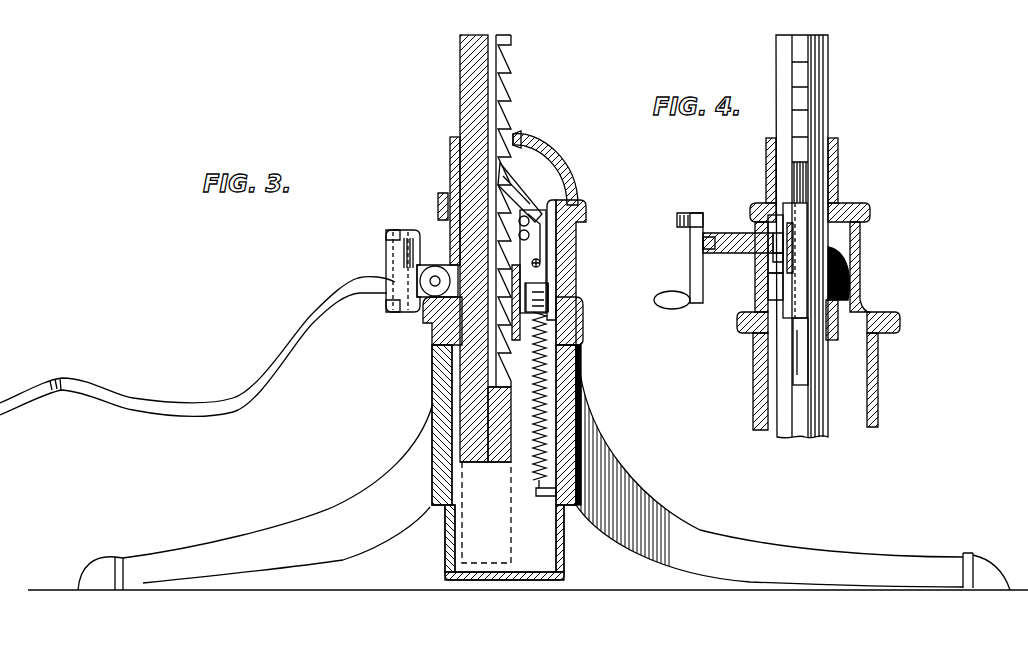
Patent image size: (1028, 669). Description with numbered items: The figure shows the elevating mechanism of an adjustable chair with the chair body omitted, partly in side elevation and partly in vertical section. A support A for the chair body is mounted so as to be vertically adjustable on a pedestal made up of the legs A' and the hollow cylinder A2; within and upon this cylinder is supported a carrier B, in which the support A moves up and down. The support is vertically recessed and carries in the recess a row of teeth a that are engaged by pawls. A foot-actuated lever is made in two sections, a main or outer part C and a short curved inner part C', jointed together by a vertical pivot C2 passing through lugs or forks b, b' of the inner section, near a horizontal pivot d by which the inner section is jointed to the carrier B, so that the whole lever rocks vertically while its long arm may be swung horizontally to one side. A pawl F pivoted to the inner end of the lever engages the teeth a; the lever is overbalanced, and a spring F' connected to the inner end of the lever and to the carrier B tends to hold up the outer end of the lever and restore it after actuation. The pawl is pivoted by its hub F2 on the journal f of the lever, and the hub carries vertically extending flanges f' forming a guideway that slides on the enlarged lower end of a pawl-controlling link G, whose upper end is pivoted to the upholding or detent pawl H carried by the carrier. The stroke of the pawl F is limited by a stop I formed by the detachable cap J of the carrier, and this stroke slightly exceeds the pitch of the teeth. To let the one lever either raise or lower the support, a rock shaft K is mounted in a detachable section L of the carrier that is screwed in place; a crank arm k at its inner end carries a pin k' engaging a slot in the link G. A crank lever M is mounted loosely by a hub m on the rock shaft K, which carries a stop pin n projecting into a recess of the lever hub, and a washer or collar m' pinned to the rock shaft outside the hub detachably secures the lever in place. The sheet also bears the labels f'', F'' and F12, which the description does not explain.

In FIG. 3, the support A is at (464, 248).
In FIG. 4, the support A is at (816, 236).
In FIG. 3, the row of teeth a is at (505, 118).
In FIG. 4, the row of teeth a is at (803, 100).
In FIG. 3, the stop I is at (520, 140).
In FIG. 3, the detachable cap J is at (545, 168).
In FIG. 3, the upholding or detent pawl H is at (512, 203).
In FIG. 3, the pawl F is at (553, 254).
In FIG. 3, the pawl controlling link G is at (552, 252).
In FIG. 4, the pawl controlling link G is at (785, 236).
In FIG. 3, the pin k' is at (573, 263).
In FIG. 3, the guide bar f'' is at (576, 292).
In FIG. 3, the flanges or projections f' is at (577, 294).
In FIG. 3, the hub or bearing F2 is at (549, 307).
In FIG. 3, the spring F'' is at (578, 404).
In FIG. 3, the carrier B is at (432, 357).
In FIG. 4, the carrier B is at (878, 396).
In FIG. 3, the hollow cylinder A2 is at (432, 405).
In FIG. 3, the legs A' is at (544, 467).
In FIG. 3, the main or outer part of lever C is at (197, 347).
In FIG. 3, the short curved inner part of lever C' is at (403, 256).
In FIG. 4, the short curved inner part of lever C' is at (862, 289).
In FIG. 3, the vertical pivot C2 is at (400, 232).
In FIG. 3, the horizontal pivot d is at (430, 282).
In FIG. 3, the lug or fork b is at (378, 244).
In FIG. 3, the lug or fork b' is at (382, 316).
In FIG. 4, the spring F' is at (838, 243).
In FIG. 4, the pawl slot F12 is at (800, 300).
In FIG. 4, the journal f is at (753, 345).
In FIG. 4, the rock shaft K is at (738, 216).
In FIG. 4, the detachable section of support carrier L is at (768, 281).
In FIG. 4, the actuating lever or crank M is at (695, 278).
In FIG. 4, the hub or short sleeve m is at (738, 231).
In FIG. 4, the washer or collar m' is at (687, 239).
In FIG. 4, the stop pin n is at (745, 254).
In FIG. 4, the crank arm k is at (753, 264).